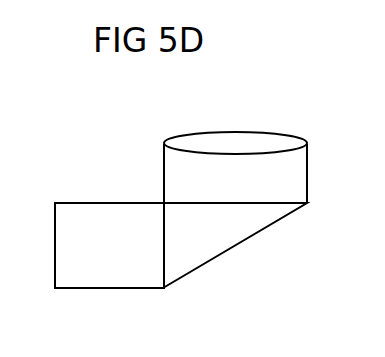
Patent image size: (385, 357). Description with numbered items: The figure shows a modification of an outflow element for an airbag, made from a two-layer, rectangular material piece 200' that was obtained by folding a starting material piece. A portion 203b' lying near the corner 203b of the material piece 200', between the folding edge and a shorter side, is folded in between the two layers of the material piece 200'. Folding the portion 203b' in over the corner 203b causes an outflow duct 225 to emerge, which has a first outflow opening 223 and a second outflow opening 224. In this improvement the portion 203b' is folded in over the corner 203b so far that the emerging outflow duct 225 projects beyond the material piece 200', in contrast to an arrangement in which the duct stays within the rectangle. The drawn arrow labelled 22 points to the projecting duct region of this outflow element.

The two-layer rectangular material piece 200' is at (109, 228).
The protrusion 22 is at (309, 170).
The second outflow opening 224 is at (248, 142).
The outflow duct 225 is at (295, 160).
The corner of the material piece 203b is at (129, 153).
The portion near the corner 203b' is at (235, 127).
The first outflow opening 223 is at (232, 250).